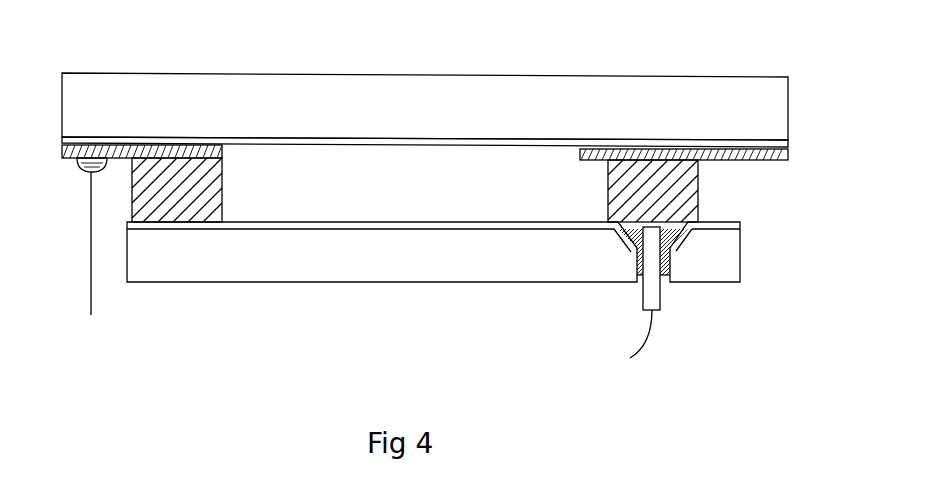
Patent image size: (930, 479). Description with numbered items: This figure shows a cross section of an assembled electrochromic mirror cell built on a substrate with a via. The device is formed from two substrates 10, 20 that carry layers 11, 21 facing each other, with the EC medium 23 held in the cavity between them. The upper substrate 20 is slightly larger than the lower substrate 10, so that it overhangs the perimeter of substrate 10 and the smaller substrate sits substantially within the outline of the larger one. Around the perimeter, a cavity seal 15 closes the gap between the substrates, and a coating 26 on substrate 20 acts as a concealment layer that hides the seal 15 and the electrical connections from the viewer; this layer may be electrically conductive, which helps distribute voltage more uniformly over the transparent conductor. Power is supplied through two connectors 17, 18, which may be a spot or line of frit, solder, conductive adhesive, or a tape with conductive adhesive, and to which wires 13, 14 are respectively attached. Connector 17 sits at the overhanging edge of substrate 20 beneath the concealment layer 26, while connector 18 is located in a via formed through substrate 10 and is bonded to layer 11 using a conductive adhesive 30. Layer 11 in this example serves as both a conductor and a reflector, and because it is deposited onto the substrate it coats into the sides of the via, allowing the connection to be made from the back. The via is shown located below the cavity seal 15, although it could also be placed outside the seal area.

The substrate 10 is at (300, 275).
The layer 11 is at (440, 227).
The powering wire 13 is at (91, 290).
The powering wire 14 is at (647, 342).
The cavity seal 15 is at (670, 185).
The electrical connector 17 is at (83, 168).
The electrical connector 18 is at (657, 295).
The substrate 20 is at (335, 100).
The layer 21 is at (428, 143).
The EC medium 23 is at (527, 178).
The concealment layer 26 is at (765, 162).
The conductive adhesive 30 is at (635, 267).